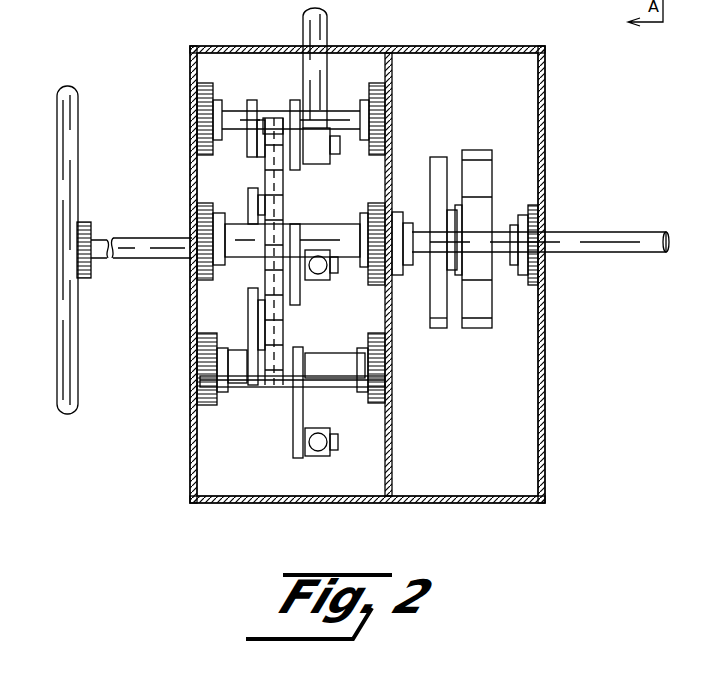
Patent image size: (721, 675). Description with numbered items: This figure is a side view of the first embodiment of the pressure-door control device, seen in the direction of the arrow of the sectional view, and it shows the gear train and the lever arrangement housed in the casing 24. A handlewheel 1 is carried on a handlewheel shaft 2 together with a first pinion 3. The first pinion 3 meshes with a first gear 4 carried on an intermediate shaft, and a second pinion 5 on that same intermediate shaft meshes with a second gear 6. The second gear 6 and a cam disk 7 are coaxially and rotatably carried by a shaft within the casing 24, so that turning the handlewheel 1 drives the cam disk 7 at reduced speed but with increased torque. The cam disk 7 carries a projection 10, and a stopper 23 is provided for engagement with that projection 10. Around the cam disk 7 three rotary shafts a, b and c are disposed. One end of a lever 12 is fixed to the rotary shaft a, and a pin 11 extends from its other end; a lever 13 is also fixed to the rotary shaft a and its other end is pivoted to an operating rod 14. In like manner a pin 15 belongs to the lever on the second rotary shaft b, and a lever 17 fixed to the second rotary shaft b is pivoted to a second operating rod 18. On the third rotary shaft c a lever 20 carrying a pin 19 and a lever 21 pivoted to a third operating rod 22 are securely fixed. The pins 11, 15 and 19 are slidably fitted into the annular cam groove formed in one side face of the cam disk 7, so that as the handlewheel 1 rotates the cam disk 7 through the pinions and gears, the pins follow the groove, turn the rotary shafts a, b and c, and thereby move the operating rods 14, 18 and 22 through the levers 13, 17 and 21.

The handlewheel 1 is at (57, 98).
The handlewheel shaft 2 is at (106, 260).
The first pinion 3 is at (434, 200).
The first gear 4 is at (440, 328).
The second pinion 5 is at (482, 282).
The second gear 6 is at (248, 196).
The cam disk 7 is at (285, 184).
The projection 10 is at (274, 118).
The pin 11 is at (260, 157).
The lever 12 is at (252, 100).
The lever 13 is at (295, 100).
The operating rod 14 is at (327, 26).
The pin 15 is at (260, 238).
The lever 17 is at (298, 286).
The second operating rod 18 is at (330, 270).
The pin 19 is at (257, 320).
The lever 20 is at (200, 356).
The lever 21 is at (292, 428).
The third operating rod 22 is at (320, 456).
The stopper 23 is at (240, 388).
The casing 24 is at (546, 100).
The rotary shaft a is at (197, 120).
The second rotary shaft b is at (386, 244).
The third rotary shaft c is at (338, 372).